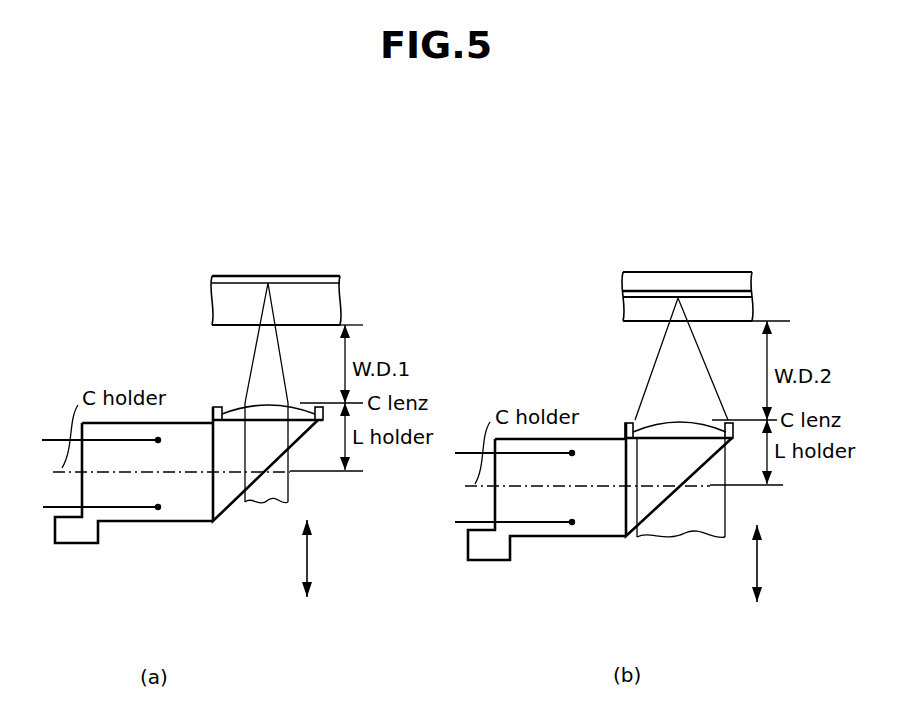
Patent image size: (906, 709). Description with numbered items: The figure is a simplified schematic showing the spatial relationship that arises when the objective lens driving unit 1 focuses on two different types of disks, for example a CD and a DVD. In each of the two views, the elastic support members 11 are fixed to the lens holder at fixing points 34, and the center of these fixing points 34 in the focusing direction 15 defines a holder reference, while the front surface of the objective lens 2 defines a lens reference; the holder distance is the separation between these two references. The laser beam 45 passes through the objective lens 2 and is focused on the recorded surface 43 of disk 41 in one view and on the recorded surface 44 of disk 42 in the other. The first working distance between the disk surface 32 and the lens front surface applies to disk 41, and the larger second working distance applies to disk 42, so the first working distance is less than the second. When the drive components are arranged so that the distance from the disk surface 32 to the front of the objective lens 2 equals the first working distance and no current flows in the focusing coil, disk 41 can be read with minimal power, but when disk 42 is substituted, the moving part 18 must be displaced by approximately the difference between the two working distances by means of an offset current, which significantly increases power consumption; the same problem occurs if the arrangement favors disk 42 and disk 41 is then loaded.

The objective lens driving unit 1 is at (162, 635).
The objective lens 2 is at (237, 410).
The elastic support members 11 is at (47, 441).
The focusing direction 15 is at (545, 561).
The moving part 18 is at (203, 502).
The disk surface 32 is at (580, 324).
The fixing points 34 is at (157, 443).
The disk 41 is at (222, 303).
The disk 42 is at (632, 310).
The recorded surface 43 is at (302, 276).
The recorded surface 44 is at (725, 293).
The laser beam 45 is at (245, 505).